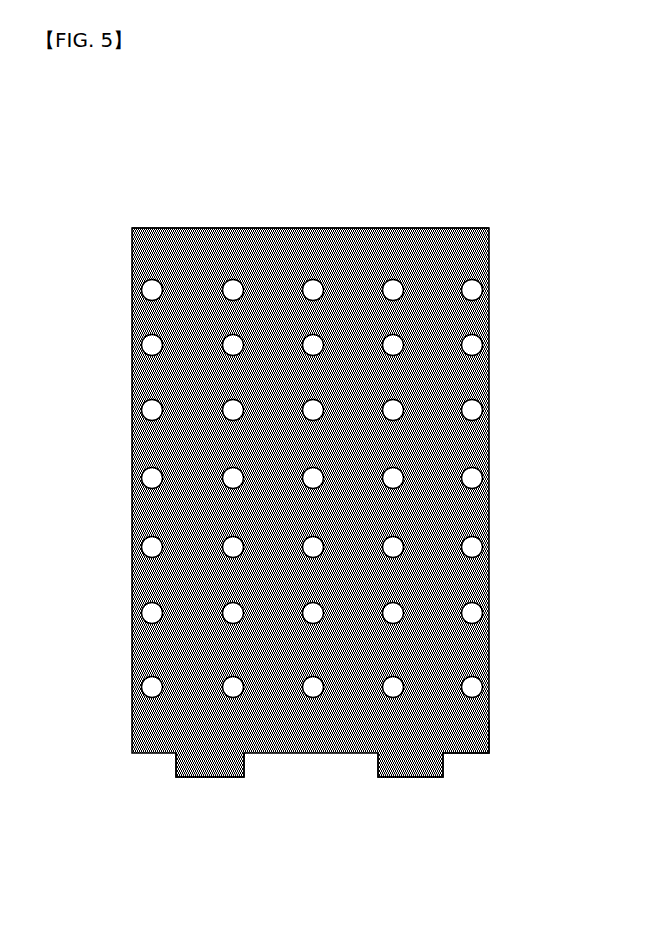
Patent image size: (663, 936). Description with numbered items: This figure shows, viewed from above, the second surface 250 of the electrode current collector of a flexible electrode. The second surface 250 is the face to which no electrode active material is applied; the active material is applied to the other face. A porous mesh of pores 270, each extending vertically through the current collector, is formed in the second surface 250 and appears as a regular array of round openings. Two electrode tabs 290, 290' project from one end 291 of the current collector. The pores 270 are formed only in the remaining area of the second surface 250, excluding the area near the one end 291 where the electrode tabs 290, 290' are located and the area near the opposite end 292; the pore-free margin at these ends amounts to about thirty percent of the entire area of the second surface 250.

The second surface 250 is at (197, 248).
The opposite end 292 is at (372, 228).
The pores 270 is at (470, 288).
The one end 291 is at (475, 755).
The electrode tab 290 is at (200, 833).
The electrode tab 290' is at (395, 833).